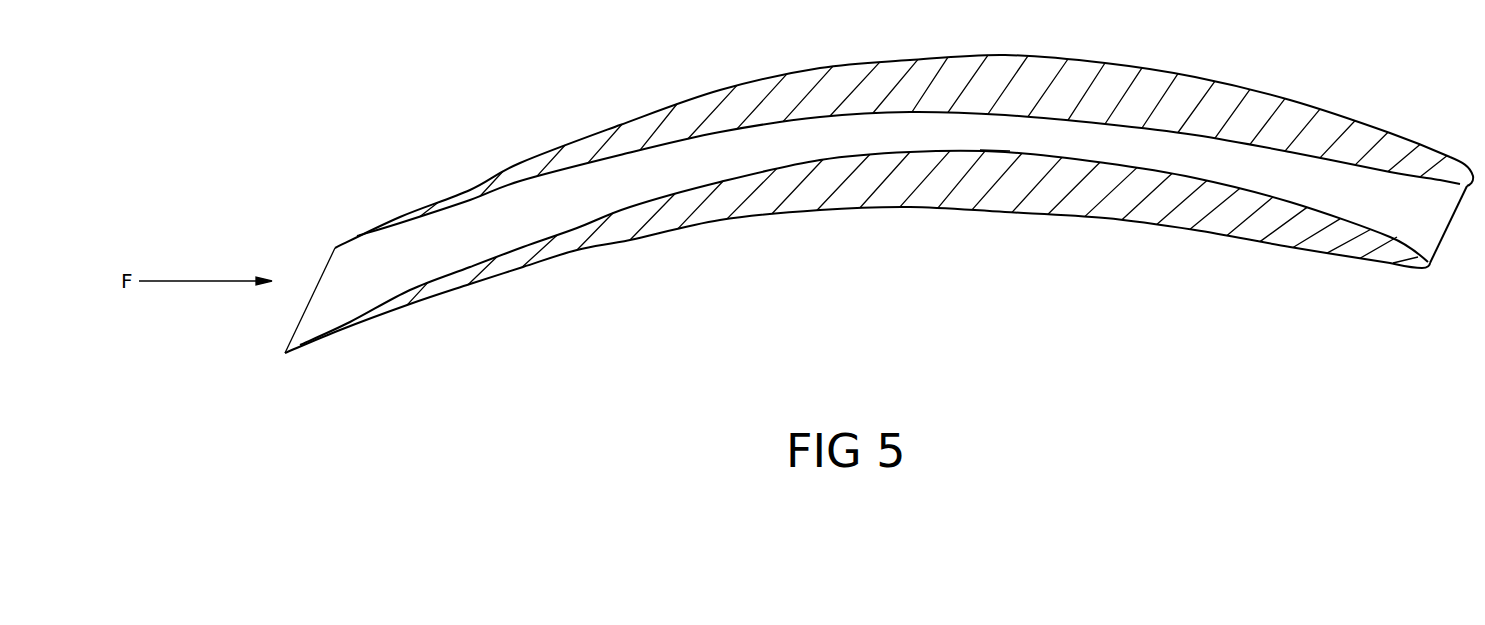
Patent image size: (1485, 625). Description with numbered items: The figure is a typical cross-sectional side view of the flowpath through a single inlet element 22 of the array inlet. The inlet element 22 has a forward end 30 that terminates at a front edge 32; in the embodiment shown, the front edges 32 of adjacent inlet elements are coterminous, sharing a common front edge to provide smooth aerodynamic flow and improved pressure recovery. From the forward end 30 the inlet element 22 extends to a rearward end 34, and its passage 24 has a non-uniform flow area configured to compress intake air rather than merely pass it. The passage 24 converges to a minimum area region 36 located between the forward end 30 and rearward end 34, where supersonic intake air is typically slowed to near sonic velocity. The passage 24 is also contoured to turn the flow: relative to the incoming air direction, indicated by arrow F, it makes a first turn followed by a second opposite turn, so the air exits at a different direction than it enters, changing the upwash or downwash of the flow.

The inlet element 22 is at (340, 305).
The passage 24 is at (537, 180).
The forward end 30 is at (483, 258).
The front edge 32 is at (323, 268).
The rearward end 34 is at (1367, 200).
The minimum area region 36 is at (977, 150).